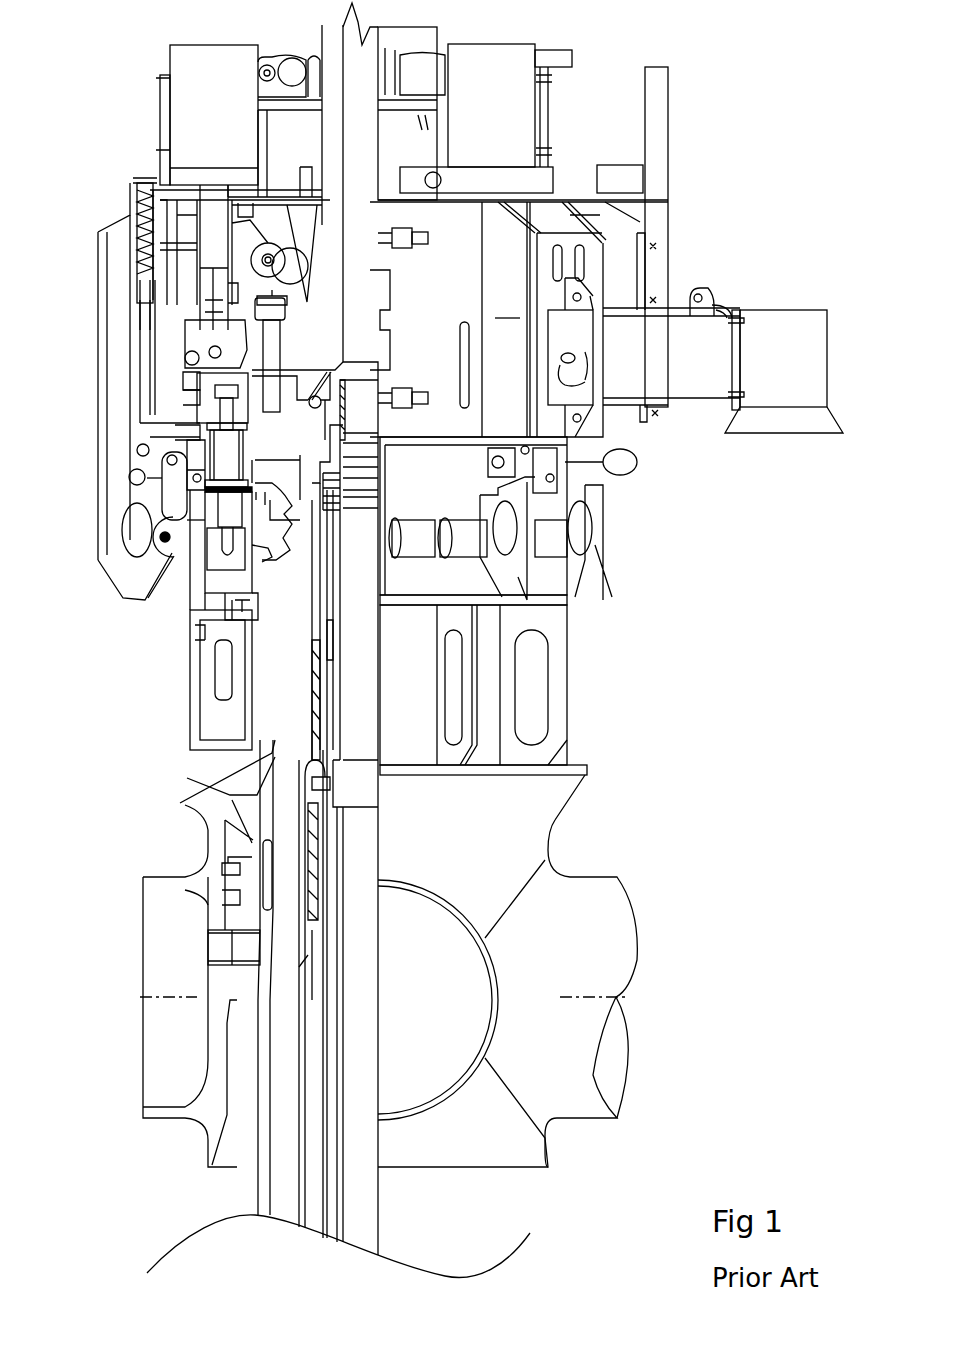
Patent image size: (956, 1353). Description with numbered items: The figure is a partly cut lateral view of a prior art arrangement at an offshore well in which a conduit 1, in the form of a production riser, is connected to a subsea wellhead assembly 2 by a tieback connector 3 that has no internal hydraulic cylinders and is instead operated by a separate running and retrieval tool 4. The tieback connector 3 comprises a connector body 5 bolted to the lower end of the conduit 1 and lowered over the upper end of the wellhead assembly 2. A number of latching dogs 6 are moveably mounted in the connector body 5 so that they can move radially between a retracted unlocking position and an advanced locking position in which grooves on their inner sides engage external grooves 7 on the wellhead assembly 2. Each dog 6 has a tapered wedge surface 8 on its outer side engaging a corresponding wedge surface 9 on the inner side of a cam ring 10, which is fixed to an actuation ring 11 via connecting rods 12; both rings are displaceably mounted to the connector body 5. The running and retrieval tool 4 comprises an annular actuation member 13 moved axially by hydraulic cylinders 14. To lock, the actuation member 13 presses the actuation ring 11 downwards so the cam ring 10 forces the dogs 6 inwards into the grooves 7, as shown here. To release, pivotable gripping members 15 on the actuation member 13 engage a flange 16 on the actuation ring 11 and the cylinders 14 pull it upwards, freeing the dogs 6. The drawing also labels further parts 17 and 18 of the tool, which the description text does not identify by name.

The conduit 1 is at (333, 42).
The subsea wellhead assembly 2 is at (290, 735).
The tieback connector 3 is at (219, 551).
The running and retrieval tool 4 is at (113, 202).
The connector body 5 is at (288, 378).
The latching dogs 6 is at (258, 558).
The external grooves 7 is at (272, 560).
The tapered wedge surface 8 is at (248, 530).
The wedge surface 9 is at (270, 540).
The cam ring 10 is at (215, 562).
The actuation ring 11 is at (205, 405).
The connecting rods 12 is at (232, 452).
The annular actuation member 13 is at (235, 340).
The hydraulic cylinders 14 is at (205, 62).
The pivotable gripping members 15 is at (188, 383).
The flange 16 is at (188, 372).
The pivot element 17 is at (185, 442).
The hinge plate 18 is at (190, 427).